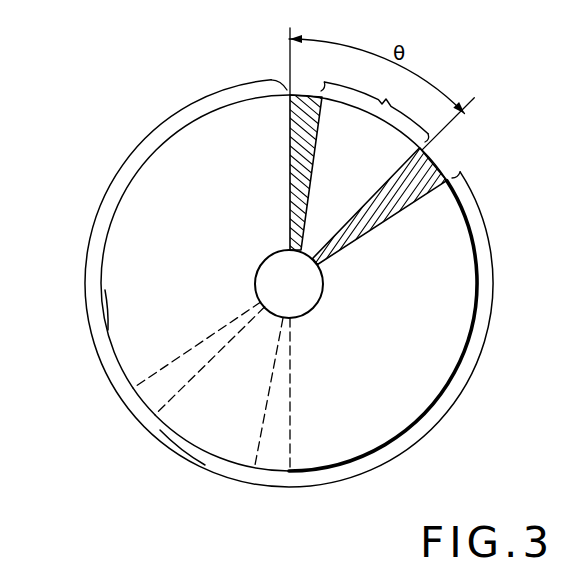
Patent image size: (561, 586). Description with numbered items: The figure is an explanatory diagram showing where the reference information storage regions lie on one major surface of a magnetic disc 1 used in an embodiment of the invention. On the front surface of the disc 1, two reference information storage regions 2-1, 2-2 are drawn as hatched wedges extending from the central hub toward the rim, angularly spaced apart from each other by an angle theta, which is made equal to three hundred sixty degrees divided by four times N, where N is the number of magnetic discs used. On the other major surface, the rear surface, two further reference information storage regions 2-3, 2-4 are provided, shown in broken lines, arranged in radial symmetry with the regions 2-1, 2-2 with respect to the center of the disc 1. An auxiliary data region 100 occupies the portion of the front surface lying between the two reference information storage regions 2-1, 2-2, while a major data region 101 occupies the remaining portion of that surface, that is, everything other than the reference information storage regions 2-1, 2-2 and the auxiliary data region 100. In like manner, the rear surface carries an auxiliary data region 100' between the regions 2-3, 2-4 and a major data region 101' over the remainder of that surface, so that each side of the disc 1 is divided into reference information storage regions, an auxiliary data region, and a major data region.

The magnetic disc 1 is at (476, 266).
The major data region 101 is at (310, 283).
The major data region 101' is at (80, 314).
The auxiliary data region 100 is at (375, 112).
The auxiliary data region 100' is at (182, 462).
The reference information storage region 2-1 is at (323, 92).
The reference information storage region 2-2 is at (425, 142).
The reference information storage region 2-3 is at (291, 476).
The reference information storage region 2-4 is at (129, 391).